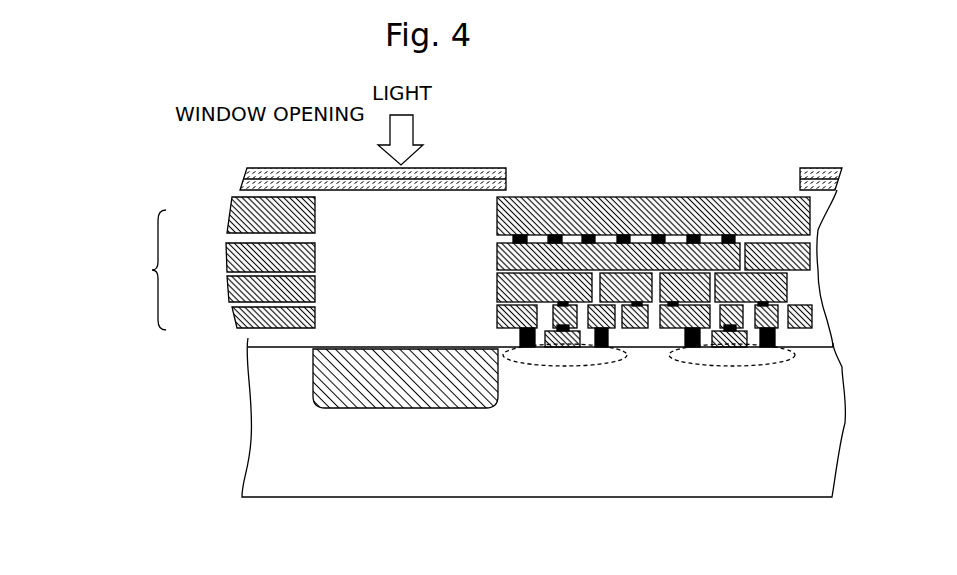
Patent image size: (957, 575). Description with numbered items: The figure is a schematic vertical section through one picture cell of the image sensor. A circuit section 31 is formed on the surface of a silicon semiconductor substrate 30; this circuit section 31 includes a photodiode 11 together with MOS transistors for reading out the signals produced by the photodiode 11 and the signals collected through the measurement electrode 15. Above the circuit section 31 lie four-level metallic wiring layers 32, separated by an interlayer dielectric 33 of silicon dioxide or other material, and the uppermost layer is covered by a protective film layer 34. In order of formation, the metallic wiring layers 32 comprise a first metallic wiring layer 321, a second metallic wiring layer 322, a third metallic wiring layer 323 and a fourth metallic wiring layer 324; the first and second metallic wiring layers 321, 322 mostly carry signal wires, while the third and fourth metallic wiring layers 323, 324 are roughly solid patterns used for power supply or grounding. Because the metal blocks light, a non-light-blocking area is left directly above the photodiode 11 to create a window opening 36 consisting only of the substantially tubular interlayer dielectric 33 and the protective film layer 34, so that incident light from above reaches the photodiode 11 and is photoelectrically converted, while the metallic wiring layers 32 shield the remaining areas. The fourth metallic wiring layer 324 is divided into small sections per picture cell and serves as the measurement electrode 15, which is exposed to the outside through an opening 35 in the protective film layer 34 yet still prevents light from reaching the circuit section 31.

The photodiode 11 is at (308, 382).
The measurement electrode 15 is at (582, 195).
The semiconductor substrate 30 is at (262, 463).
The circuit section 31 is at (592, 363).
The metallic wiring layers 32 is at (422, 233).
The interlayer dielectric 33 is at (250, 338).
The protective film layer 34 is at (245, 183).
The opening 35 is at (780, 167).
The window opening 36 is at (358, 205).
The first metallic wiring layer 321 is at (235, 316).
The second metallic wiring layer 322 is at (228, 288).
The third metallic wiring layer 323 is at (228, 256).
The fourth metallic wiring layer 324 is at (232, 215).